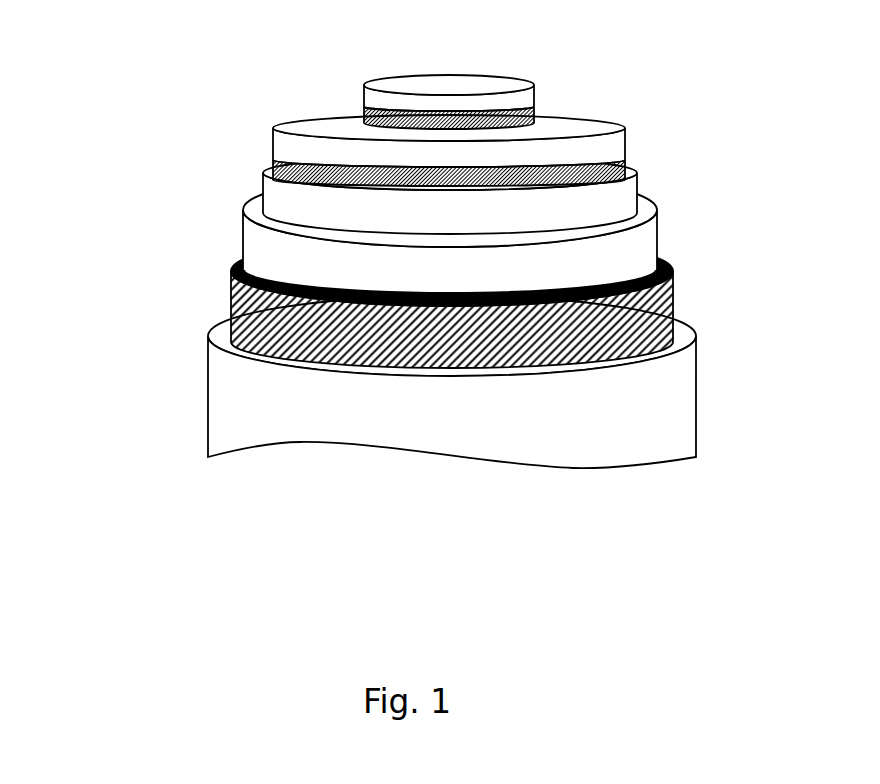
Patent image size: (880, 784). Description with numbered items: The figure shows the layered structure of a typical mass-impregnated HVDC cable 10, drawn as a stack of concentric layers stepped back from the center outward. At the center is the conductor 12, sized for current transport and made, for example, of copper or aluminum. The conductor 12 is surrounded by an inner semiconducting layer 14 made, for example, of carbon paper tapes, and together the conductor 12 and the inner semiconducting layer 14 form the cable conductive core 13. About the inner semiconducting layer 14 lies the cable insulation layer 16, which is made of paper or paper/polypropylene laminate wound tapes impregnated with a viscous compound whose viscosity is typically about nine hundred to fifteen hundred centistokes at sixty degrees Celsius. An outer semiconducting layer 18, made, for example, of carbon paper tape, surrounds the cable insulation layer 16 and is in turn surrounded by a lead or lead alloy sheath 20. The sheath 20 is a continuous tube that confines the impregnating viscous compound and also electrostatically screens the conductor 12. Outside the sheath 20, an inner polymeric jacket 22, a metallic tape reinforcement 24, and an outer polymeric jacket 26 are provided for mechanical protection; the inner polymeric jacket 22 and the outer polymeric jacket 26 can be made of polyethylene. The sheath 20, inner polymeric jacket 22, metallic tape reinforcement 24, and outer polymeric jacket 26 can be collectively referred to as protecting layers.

The mass-impregnated HVDC cable 10 is at (461, 237).
The conductor 12 is at (535, 93).
The cable conductive core 13 is at (488, 68).
The inner semiconducting layer 14 is at (537, 112).
The cable insulation layer 16 is at (557, 135).
The outer semiconducting layer 18 is at (623, 168).
The lead or lead alloy sheath 20 is at (592, 200).
The inner polymeric jacket 22 is at (632, 257).
The metallic tape reinforcement 24 is at (650, 320).
The outer polymeric jacket 26 is at (650, 408).